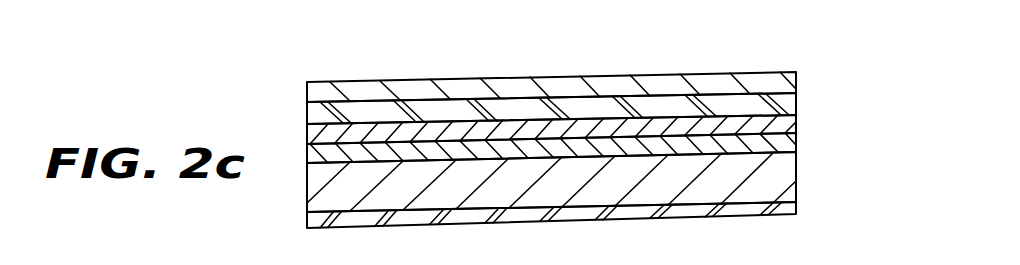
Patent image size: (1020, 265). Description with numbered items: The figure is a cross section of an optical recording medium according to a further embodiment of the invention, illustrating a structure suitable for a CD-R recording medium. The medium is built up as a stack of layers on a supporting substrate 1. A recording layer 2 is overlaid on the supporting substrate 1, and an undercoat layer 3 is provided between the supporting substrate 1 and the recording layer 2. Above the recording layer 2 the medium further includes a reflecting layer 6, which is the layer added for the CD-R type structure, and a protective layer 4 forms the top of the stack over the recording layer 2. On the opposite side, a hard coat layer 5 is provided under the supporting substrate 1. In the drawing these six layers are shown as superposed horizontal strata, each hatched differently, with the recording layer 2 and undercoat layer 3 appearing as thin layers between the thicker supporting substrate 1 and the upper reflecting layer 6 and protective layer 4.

The supporting substrate 1 is at (795, 167).
The recording layer 2 is at (795, 123).
The undercoat layer 3 is at (795, 140).
The protective layer 4 is at (795, 72).
The hard coat layer 5 is at (795, 207).
The reflecting layer 6 is at (795, 98).